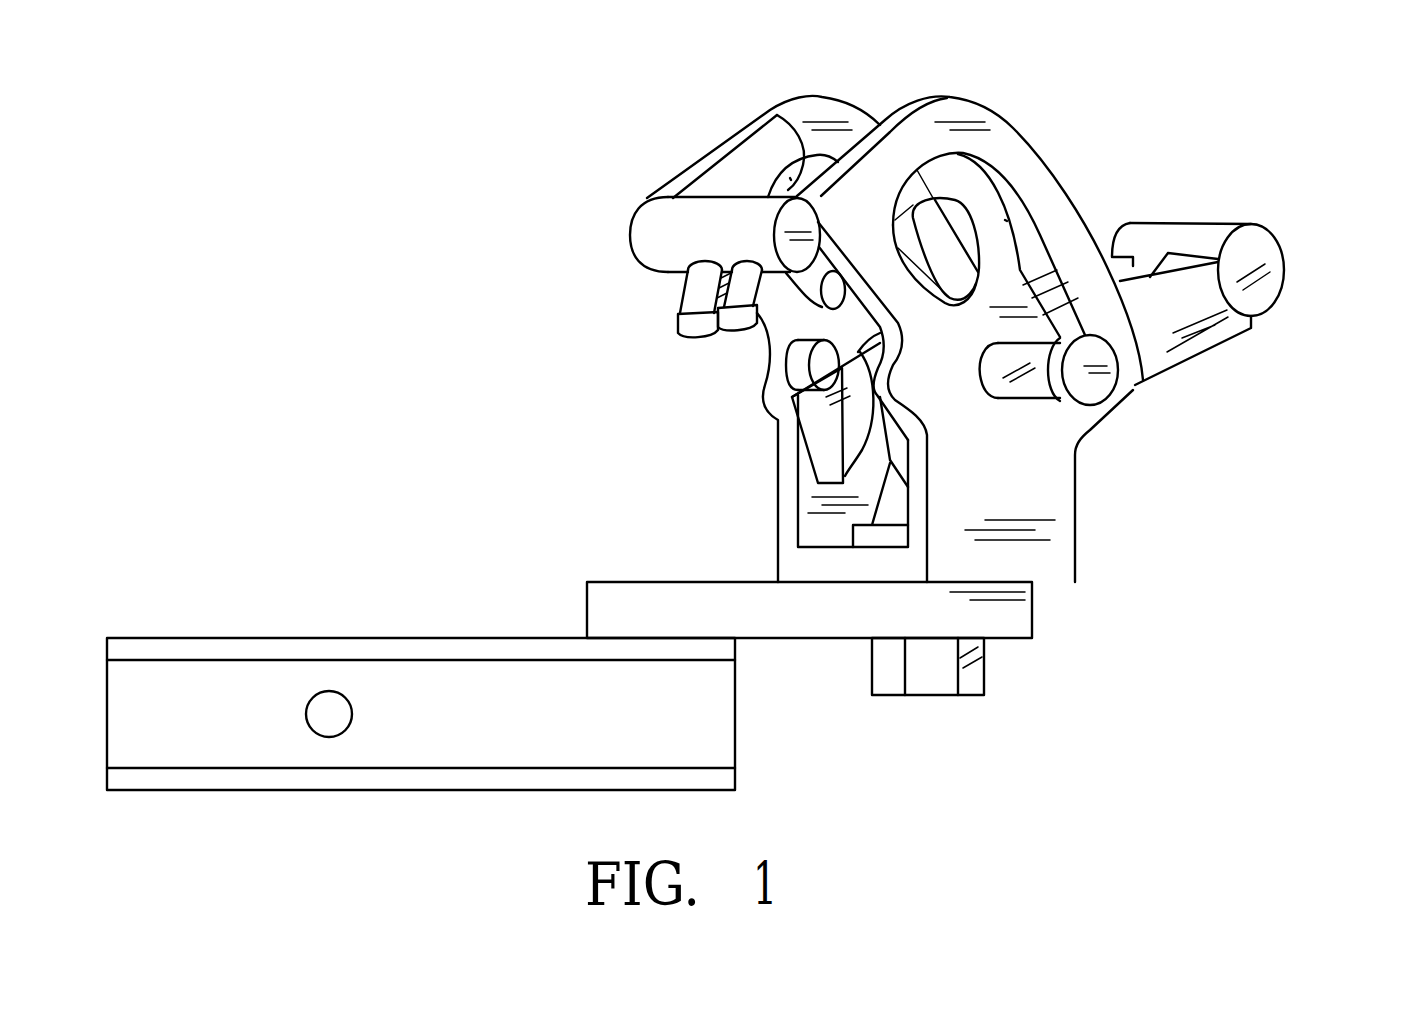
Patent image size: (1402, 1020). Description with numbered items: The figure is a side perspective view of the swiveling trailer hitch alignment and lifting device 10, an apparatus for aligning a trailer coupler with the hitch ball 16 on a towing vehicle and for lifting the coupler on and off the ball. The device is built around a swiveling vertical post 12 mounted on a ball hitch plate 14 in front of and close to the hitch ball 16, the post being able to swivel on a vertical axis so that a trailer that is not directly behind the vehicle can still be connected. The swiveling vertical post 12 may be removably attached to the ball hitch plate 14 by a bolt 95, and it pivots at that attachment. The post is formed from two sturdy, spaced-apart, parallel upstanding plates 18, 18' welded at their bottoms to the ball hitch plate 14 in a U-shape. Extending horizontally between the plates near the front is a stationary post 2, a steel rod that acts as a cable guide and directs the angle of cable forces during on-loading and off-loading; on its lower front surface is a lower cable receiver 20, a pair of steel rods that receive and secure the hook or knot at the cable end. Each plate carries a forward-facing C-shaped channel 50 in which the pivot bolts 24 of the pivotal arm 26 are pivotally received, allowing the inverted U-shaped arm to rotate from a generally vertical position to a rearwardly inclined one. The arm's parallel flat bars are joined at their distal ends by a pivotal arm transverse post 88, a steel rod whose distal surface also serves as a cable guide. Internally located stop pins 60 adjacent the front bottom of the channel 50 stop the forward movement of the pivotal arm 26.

The swiveling trailer hitch alignment and lifting device 10 is at (472, 195).
The stationary post 2 is at (642, 235).
The swiveling vertical post 12 is at (1063, 493).
The ball hitch plate 14 is at (1030, 612).
The hitch ball 16 is at (864, 428).
The upstanding plate 18 is at (970, 205).
The upstanding plate 18' is at (763, 112).
The lower cable receiver 20 is at (733, 340).
The pivot bolts 24 is at (1108, 383).
The pivotal arm 26 is at (1291, 227).
The C-shaped channel 50 is at (790, 178).
The stop pins 60 is at (800, 377).
The pivotal arm transverse post 88 is at (1187, 222).
The bolt 95 is at (978, 677).